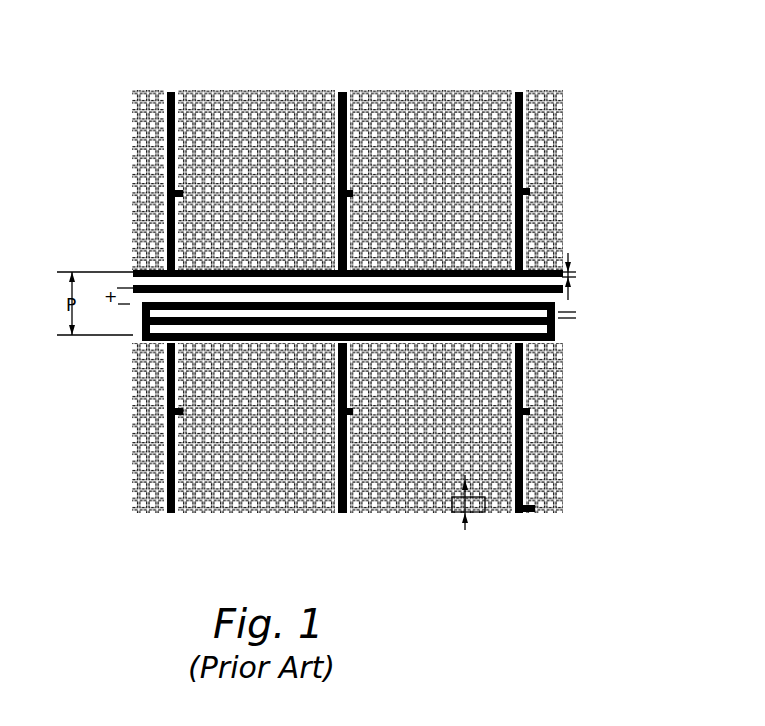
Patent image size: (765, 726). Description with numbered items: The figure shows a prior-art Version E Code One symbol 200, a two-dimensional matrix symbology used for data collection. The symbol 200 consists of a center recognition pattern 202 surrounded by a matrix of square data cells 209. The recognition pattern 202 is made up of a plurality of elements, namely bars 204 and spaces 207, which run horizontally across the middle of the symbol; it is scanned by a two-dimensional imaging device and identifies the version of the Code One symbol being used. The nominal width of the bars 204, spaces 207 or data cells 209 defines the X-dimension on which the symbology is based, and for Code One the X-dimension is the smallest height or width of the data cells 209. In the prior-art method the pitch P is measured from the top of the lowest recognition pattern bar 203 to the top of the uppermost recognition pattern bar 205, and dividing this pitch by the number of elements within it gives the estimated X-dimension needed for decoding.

The symbol 200 is at (395, 52).
The uppermost recognition pattern bar 205 is at (533, 272).
The bars 204 is at (570, 253).
The center recognition pattern 202 is at (568, 302).
The spaces 207 is at (570, 318).
The lowest recognition pattern bar 203 is at (555, 333).
The data cells 209 is at (465, 528).